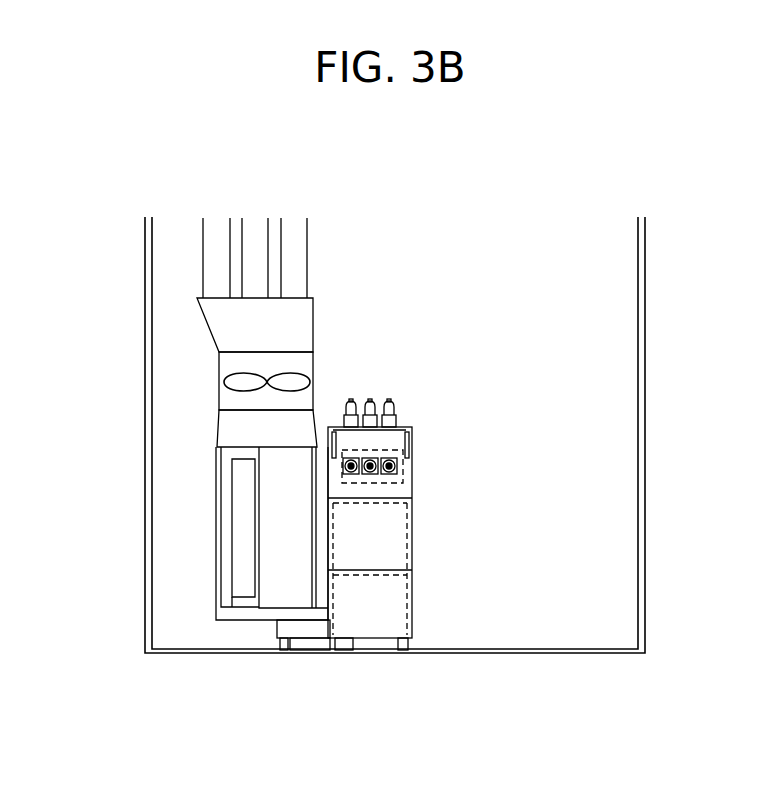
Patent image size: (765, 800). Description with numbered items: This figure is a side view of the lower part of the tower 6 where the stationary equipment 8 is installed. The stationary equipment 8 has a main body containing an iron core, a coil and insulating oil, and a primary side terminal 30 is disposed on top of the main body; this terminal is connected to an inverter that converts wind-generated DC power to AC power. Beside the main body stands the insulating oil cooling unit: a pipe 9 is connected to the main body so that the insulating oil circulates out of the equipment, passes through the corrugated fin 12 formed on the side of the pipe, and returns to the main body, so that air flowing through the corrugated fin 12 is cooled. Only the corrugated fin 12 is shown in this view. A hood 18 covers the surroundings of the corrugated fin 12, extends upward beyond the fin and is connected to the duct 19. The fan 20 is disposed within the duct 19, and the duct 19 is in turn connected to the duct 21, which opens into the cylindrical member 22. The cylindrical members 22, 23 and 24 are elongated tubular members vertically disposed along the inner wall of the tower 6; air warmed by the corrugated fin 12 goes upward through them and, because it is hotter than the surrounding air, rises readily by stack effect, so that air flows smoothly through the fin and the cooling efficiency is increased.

The tower 6 is at (645, 327).
The stationary equipment 8 is at (397, 537).
The pipe 9 is at (318, 588).
The corrugated fin 12 is at (270, 537).
The hood 18 is at (235, 430).
The duct 19 is at (235, 400).
The fan 20 is at (242, 378).
The duct 21 is at (235, 327).
The cylindrical member 22 is at (295, 270).
The cylindrical member 23 is at (253, 252).
The cylindrical member 24 is at (213, 232).
The primary side terminal 30 is at (396, 415).